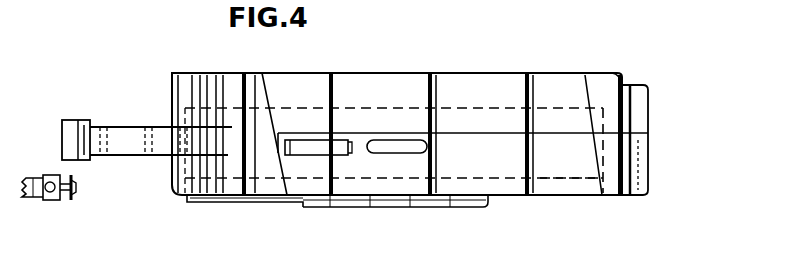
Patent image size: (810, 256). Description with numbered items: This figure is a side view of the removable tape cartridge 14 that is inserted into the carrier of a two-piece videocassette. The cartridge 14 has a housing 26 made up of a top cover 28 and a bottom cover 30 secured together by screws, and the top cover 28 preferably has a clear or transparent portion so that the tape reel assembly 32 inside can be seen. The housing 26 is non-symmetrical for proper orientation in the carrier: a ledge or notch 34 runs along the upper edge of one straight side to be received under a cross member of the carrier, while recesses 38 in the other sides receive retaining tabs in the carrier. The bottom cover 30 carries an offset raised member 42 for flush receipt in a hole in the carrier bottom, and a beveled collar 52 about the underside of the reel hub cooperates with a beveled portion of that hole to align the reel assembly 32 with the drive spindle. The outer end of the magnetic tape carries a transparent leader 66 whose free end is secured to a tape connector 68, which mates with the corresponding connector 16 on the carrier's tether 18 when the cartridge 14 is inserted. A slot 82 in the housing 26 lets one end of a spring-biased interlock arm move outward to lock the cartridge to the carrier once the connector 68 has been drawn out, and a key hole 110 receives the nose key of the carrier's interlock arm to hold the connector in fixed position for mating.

The tape cartridge 14 is at (670, 72).
The connector 16 is at (70, 193).
The tether 18 is at (43, 193).
The housing 26 is at (408, 72).
The top cover 28 is at (635, 117).
The bottom cover 30 is at (648, 168).
The tape reel assembly 32 is at (574, 181).
The notch 34 is at (623, 75).
The recesses 38 is at (405, 150).
The offset raised member 42 is at (248, 202).
The beveled collar 52 is at (487, 203).
The leader 66 is at (157, 123).
The tape connector 68 is at (77, 122).
The slot 82 is at (313, 147).
The key hole 110 is at (50, 177).